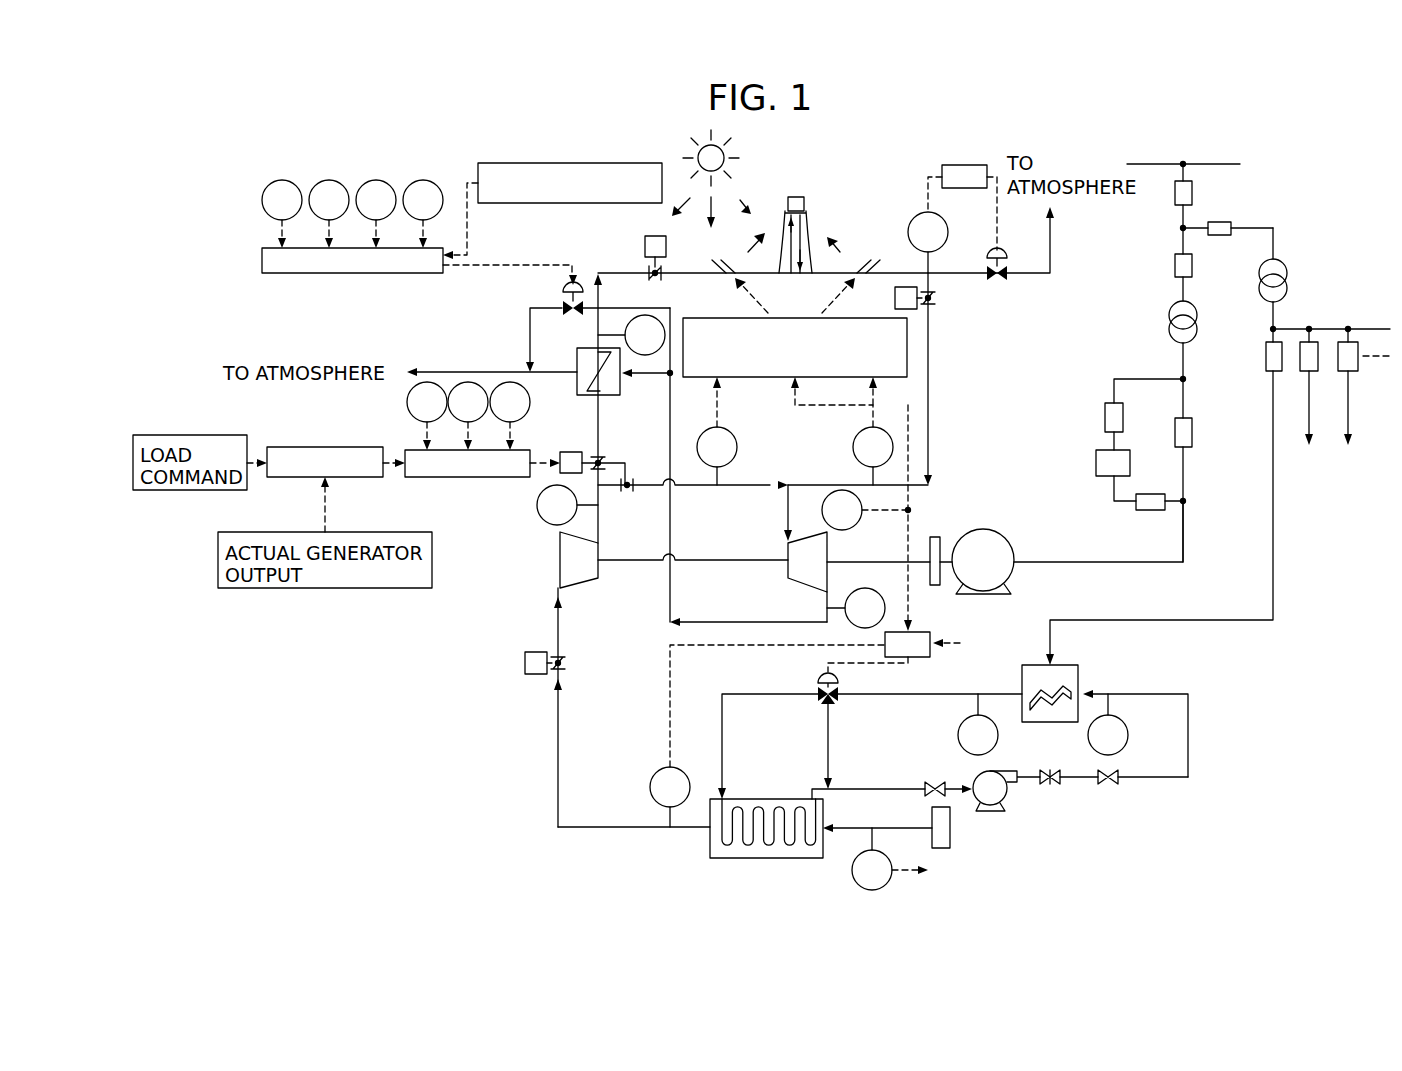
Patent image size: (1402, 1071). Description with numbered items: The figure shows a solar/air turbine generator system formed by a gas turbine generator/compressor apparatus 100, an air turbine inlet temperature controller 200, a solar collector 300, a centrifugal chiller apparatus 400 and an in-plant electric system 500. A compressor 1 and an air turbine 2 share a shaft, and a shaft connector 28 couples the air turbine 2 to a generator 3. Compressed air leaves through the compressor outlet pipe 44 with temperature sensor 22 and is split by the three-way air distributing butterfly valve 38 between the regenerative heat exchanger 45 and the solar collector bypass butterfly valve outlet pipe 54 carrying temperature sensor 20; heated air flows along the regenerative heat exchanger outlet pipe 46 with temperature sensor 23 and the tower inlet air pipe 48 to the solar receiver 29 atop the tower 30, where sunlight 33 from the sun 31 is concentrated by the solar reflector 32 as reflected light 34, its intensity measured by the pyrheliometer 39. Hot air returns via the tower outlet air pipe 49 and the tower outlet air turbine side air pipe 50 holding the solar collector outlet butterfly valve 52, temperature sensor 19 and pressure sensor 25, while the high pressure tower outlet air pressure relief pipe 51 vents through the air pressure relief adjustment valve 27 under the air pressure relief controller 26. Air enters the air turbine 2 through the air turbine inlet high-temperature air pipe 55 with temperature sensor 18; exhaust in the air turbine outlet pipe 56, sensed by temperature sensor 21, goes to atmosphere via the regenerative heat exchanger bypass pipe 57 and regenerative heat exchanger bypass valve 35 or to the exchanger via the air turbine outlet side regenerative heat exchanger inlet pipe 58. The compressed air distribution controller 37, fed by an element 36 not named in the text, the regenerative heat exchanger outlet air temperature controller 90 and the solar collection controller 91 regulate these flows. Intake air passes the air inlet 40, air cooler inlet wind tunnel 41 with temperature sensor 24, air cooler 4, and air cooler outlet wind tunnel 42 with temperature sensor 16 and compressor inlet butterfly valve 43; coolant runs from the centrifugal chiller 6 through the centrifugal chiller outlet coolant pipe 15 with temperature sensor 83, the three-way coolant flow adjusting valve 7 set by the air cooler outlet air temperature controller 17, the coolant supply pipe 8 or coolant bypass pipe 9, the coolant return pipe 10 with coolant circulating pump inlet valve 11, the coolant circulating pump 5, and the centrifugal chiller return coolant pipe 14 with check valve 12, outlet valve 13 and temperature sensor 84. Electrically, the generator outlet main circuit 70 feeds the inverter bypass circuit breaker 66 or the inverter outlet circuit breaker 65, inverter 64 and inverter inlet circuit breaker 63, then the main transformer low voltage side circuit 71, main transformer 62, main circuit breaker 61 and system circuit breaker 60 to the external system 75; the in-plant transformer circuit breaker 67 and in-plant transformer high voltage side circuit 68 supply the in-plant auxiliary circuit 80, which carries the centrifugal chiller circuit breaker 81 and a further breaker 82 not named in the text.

The compressor 1 is at (590, 589).
The air turbine 2 is at (790, 585).
The generator 3 is at (1000, 530).
The air cooler 4 is at (783, 799).
The coolant circulating pump 5 is at (1005, 772).
The centrifugal chiller 6 is at (1080, 682).
The three-way coolant flow adjusting valve 7 is at (816, 678).
The coolant supply pipe 8 is at (724, 732).
The coolant bypass pipe 9 is at (830, 732).
The coolant return pipe 10 is at (870, 789).
The coolant circulating pump inlet valve 11 is at (935, 782).
The check valve 12 is at (1050, 785).
The outlet valve 13 is at (1108, 785).
The centrifugal chiller return coolant pipe 14 is at (1150, 694).
The centrifugal chiller outlet coolant pipe 15 is at (920, 694).
The temperature sensor 16 is at (650, 793).
The air cooler outlet air temperature controller 17 is at (931, 632).
The temperature sensor 18 is at (275, 182).
The temperature sensor 19 is at (462, 382).
The temperature sensor 20 is at (502, 382).
The temperature sensor 21 is at (320, 182).
The temperature sensor 22 is at (368, 182).
The temperature sensor 23 is at (415, 182).
The temperature sensor 24 is at (852, 878).
The pressure sensor 25 is at (915, 213).
The air pressure relief controller 26 is at (975, 165).
The air pressure relief adjustment valve 27 is at (1005, 258).
The shaft connector 28 is at (940, 536).
The solar receiver 29 is at (800, 195).
The tower 30 is at (813, 222).
The sun 31 is at (690, 153).
The solar reflector 32 is at (868, 258).
The sunlight 33 is at (713, 207).
The reflected light 34 is at (746, 250).
The regenerative heat exchanger bypass valve 35 is at (562, 300).
The deviation calculator 36 is at (300, 447).
The compressed air distribution controller 37 is at (445, 477).
The three-way air distributing butterfly valve 38 is at (571, 452).
The pyrheliometer 39 is at (530, 163).
The air inlet 40 is at (952, 833).
The air cooler inlet wind tunnel 41 is at (868, 828).
The air cooler outlet wind tunnel 42 is at (598, 828).
The compressor inlet butterfly valve 43 is at (566, 667).
The compressor outlet pipe 44 is at (600, 527).
The regenerative heat exchanger 45 is at (600, 397).
The regenerative heat exchanger outlet pipe 46 is at (645, 270).
The tower inlet air pipe 48 is at (770, 270).
The tower outlet air pipe 49 is at (826, 278).
The tower outlet air turbine side air pipe 50 is at (938, 294).
The high pressure tower outlet air pressure relief pipe 51 is at (963, 272).
The solar collector outlet butterfly valve 52 is at (935, 310).
The solar collector bypass butterfly valve outlet pipe 54 is at (697, 487).
The air turbine inlet high-temperature air pipe 55 is at (786, 522).
The air turbine outlet pipe 56 is at (727, 622).
The regenerative heat exchanger bypass pipe 57 is at (672, 310).
The air turbine outlet side regenerative heat exchanger inlet pipe 58 is at (648, 378).
The system circuit breaker 60 is at (1195, 194).
The main circuit breaker 61 is at (1173, 266).
The main transformer 62 is at (1167, 330).
The inverter inlet circuit breaker 63 is at (1102, 418).
The inverter 64 is at (1093, 463).
The inverter outlet circuit breaker 65 is at (1150, 512).
The inverter bypass circuit breaker 66 is at (1194, 436).
The in-plant transformer circuit breaker 67 is at (1218, 236).
The in-plant transformer high voltage side circuit 68 is at (1276, 240).
The generator outlet main circuit 70 is at (1080, 564).
The main transformer low voltage side circuit 71 is at (1185, 356).
The external system 75 is at (1215, 164).
The in-plant auxiliary circuit 80 is at (1360, 329).
The centrifugal chiller circuit breaker 81 is at (1268, 373).
The breaker 82 is at (1308, 373).
The temperature sensor 83 is at (957, 735).
The temperature sensor 84 is at (1276, 492).
The regenerative heat exchanger outlet air temperature controller 90 is at (300, 275).
The solar collection controller 91 is at (750, 378).
The gas turbine generator/compressor apparatus 100 is at (520, 602).
The air turbine inlet temperature controller 200 is at (485, 312).
The solar collector 300 is at (868, 160).
The centrifugal chiller apparatus 400 is at (1218, 698).
The in-plant electric system 500 is at (1308, 192).